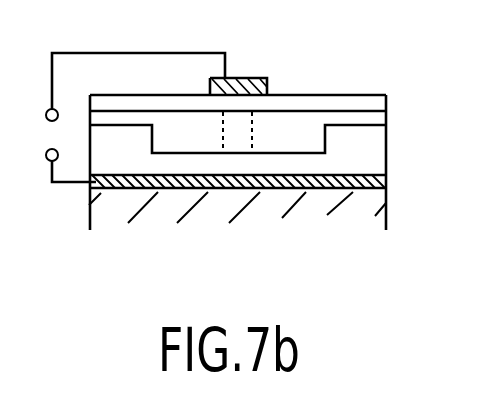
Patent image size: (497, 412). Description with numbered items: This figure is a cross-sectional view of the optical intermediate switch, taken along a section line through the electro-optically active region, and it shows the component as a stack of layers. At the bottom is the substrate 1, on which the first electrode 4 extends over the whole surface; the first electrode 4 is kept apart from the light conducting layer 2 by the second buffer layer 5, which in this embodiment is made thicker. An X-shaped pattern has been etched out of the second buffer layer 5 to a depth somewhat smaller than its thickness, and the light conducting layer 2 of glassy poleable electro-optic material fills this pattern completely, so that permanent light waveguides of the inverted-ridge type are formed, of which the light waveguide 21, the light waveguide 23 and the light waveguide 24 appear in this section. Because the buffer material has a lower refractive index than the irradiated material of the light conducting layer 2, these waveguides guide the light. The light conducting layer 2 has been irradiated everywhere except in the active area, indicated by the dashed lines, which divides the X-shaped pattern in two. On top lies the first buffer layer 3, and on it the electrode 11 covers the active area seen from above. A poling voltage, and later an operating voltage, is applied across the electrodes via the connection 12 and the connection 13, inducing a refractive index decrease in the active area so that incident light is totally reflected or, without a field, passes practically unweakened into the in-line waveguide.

The substrate 1 is at (352, 195).
The light conducting layer 2 is at (380, 113).
The first buffer layer 3 is at (352, 98).
The first electrode 4 is at (324, 180).
The second buffer layer 5 is at (368, 152).
The electrode 11 is at (257, 76).
The connection 12 is at (61, 161).
The connection 13 is at (126, 91).
The light waveguide 21 is at (244, 123).
The light waveguide 23 is at (280, 142).
The light waveguide 24 is at (185, 145).